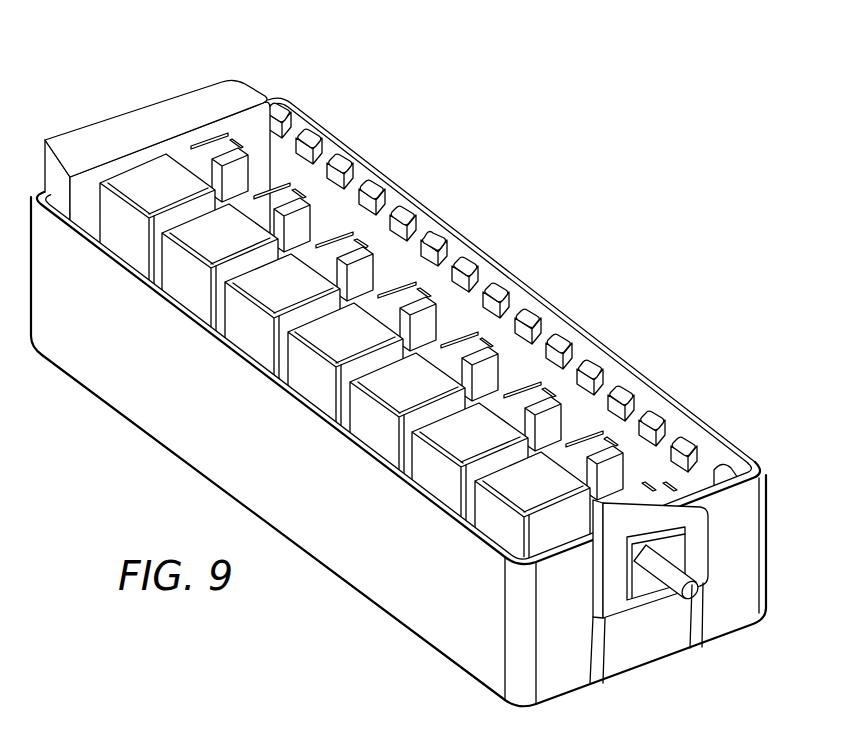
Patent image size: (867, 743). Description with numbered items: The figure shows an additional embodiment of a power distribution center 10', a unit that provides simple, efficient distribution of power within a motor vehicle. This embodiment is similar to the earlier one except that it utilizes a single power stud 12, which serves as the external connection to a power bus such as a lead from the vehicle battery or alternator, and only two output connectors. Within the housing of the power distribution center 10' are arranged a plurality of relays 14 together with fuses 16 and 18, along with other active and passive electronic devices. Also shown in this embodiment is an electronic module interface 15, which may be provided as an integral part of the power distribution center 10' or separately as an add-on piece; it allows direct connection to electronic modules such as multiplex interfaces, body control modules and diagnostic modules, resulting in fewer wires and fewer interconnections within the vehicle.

The power distribution center 10' is at (434, 451).
The power stud 12 is at (670, 582).
The relays 14 is at (545, 484).
The electronic module interface 15 is at (210, 97).
The fuses 16 is at (603, 410).
The fuses 18 is at (562, 338).